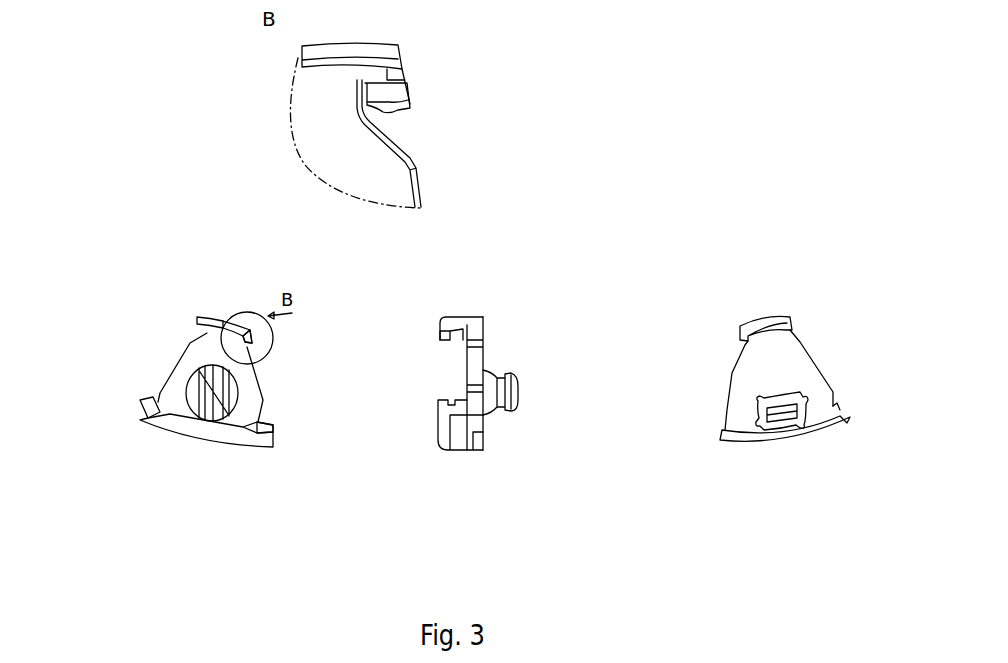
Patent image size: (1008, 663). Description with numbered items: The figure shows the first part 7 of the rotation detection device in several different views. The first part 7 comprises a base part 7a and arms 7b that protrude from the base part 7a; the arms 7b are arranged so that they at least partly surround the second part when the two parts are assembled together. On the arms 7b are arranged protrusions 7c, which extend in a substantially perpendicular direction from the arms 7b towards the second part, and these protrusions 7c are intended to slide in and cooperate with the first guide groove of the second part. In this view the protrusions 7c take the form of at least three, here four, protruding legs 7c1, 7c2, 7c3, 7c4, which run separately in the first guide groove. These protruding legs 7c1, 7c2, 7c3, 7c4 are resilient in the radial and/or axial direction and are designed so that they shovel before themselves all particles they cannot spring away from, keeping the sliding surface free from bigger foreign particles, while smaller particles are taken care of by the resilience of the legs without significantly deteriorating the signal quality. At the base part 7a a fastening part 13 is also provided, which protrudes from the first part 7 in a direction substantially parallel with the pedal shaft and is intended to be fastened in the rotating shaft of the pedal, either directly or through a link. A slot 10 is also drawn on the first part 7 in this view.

The first part 7 is at (765, 367).
The base part 7a is at (477, 355).
The arm 7b is at (462, 318).
The protrusion 7c is at (442, 322).
The protruding leg 7c1 is at (415, 107).
The protruding leg 7c2 is at (147, 395).
The protruding leg 7c3 is at (258, 422).
The protruding leg 7c4 is at (110, 233).
The slot 10 is at (797, 417).
The fastening part 13 is at (185, 380).